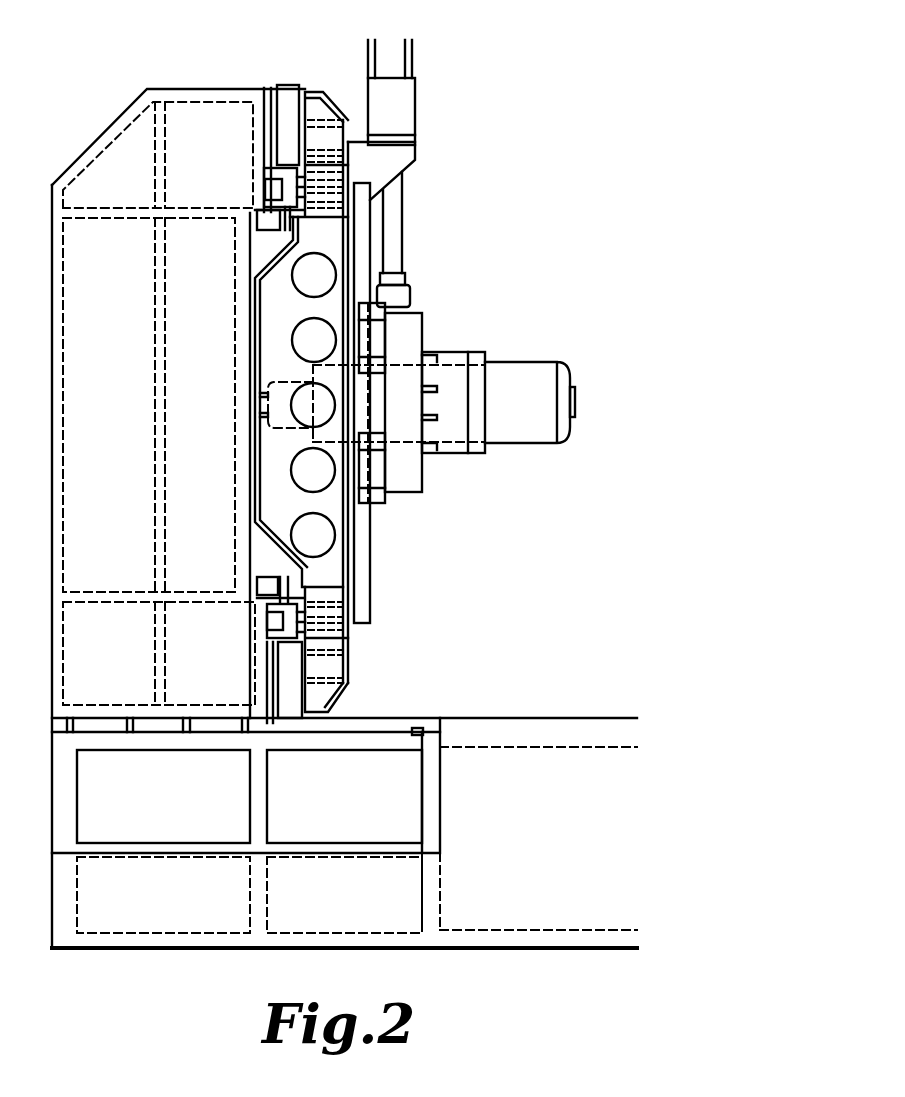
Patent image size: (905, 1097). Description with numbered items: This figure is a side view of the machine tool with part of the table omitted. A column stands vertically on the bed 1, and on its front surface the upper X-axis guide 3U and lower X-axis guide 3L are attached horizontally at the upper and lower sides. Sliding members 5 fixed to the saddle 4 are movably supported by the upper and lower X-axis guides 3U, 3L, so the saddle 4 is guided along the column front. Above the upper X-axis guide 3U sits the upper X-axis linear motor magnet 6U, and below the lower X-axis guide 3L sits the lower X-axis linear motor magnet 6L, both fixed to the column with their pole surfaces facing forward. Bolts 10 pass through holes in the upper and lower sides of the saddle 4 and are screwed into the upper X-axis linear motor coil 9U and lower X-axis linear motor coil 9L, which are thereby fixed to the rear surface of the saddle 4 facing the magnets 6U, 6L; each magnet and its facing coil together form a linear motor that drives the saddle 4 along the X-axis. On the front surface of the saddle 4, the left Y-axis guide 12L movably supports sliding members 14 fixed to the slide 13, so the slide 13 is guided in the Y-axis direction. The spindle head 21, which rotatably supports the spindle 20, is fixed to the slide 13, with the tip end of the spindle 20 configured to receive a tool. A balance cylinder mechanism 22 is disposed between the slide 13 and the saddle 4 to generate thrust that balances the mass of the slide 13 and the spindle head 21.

The bed 1 is at (87, 795).
The upper X-axis guide 3U is at (267, 187).
The lower X-axis guide 3L is at (267, 620).
The saddle 4 is at (333, 570).
The sliding member 5 is at (267, 172).
The upper X-axis linear motor magnet 6U is at (267, 88).
The lower X-axis linear motor magnet 6L is at (273, 725).
The upper X-axis linear motor coil 9U is at (287, 85).
The lower X-axis linear motor coil 9L is at (297, 695).
The bolt 10 is at (313, 98).
The left Y-axis guide 12L is at (365, 598).
The slide 13 is at (415, 468).
The sliding member 14 is at (383, 502).
The spindle 20 is at (577, 395).
The spindle head 21 is at (513, 368).
The balance cylinder mechanism 22 is at (393, 220).